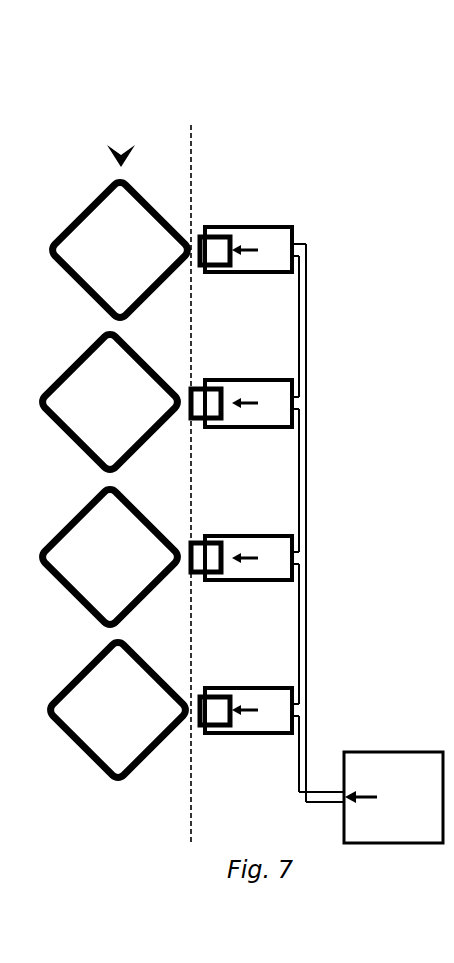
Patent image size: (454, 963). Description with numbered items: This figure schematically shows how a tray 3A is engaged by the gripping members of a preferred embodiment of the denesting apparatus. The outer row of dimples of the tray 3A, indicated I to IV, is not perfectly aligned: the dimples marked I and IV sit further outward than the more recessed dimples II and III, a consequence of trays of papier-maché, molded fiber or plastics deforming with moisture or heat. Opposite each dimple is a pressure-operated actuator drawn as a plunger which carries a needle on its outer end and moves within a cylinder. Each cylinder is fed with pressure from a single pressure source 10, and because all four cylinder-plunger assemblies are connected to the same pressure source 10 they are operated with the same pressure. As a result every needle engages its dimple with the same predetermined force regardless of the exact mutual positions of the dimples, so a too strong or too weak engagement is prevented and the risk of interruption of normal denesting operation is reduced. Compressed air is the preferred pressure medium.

The tray 3A is at (121, 150).
The pressure source 10 is at (418, 765).